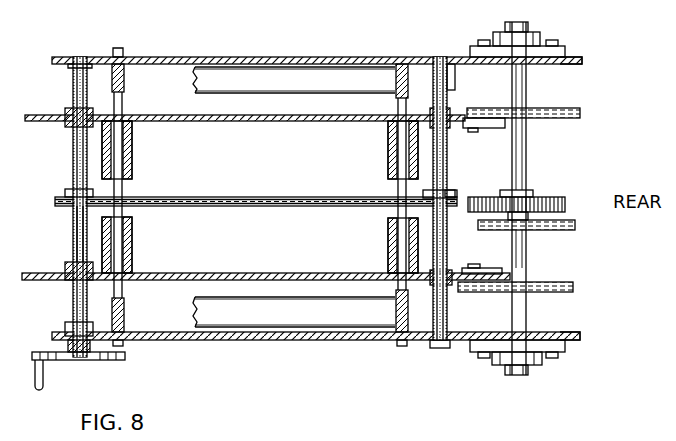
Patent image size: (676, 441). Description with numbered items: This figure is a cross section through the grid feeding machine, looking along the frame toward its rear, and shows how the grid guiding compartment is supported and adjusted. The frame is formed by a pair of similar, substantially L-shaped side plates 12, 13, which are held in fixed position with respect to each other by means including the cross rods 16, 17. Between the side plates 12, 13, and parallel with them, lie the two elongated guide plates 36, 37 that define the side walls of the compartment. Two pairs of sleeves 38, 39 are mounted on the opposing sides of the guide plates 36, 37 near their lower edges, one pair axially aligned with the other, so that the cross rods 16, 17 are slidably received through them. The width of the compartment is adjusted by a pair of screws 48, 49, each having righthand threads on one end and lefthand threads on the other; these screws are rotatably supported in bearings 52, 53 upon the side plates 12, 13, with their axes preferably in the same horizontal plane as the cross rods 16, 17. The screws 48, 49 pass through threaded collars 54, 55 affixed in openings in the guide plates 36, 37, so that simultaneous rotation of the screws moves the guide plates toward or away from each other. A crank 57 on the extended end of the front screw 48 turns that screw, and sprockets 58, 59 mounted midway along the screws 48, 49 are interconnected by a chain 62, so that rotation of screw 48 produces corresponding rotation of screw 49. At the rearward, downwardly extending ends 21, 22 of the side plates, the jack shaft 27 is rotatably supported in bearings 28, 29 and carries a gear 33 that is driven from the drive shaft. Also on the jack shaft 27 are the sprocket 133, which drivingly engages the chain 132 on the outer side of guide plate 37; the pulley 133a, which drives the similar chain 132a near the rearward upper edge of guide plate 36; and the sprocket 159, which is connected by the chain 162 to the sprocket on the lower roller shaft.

The side plate 12 is at (219, 57).
The side plate 13 is at (279, 340).
The cross rod 16 is at (395, 306).
The cross rod 17 is at (122, 293).
The rearward downwardly extending end 21 is at (582, 62).
The rearward downwardly extending end 22 is at (575, 340).
The jack shaft 27 is at (527, 153).
The bearing 28 is at (545, 37).
The bearing 29 is at (540, 368).
The gear 33 is at (555, 197).
The guide plate 36 is at (221, 122).
The guide plate 37 is at (250, 273).
The sleeve 38 is at (131, 146).
The sleeve 39 is at (131, 241).
The screw 48 is at (72, 219).
The screw 49 is at (440, 181).
The bearing 52 is at (70, 68).
The bearing 53 is at (442, 57).
The threaded collar 54 is at (72, 126).
The threaded collar 55 is at (67, 272).
The crank 57 is at (65, 362).
The sprocket 58 is at (63, 192).
The sprocket 59 is at (425, 195).
The chain 62 is at (263, 197).
The chain 132 is at (560, 282).
The chain 132a is at (569, 118).
The sprocket 133 is at (530, 290).
The pulley 133a is at (523, 118).
The sprocket 159 is at (530, 231).
The chain 162 is at (562, 231).